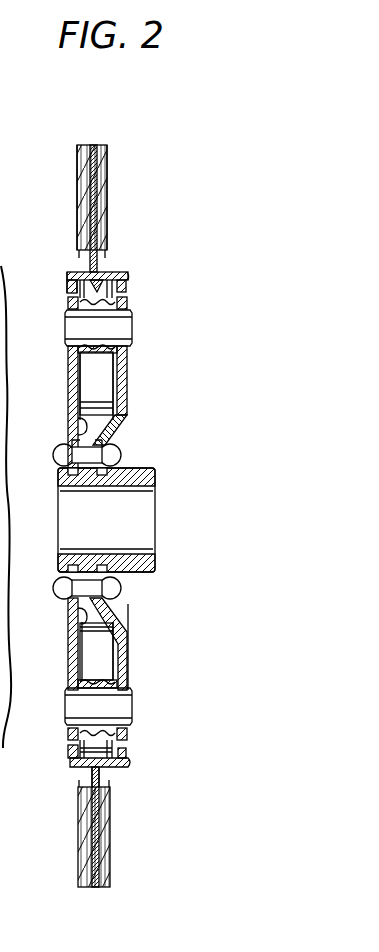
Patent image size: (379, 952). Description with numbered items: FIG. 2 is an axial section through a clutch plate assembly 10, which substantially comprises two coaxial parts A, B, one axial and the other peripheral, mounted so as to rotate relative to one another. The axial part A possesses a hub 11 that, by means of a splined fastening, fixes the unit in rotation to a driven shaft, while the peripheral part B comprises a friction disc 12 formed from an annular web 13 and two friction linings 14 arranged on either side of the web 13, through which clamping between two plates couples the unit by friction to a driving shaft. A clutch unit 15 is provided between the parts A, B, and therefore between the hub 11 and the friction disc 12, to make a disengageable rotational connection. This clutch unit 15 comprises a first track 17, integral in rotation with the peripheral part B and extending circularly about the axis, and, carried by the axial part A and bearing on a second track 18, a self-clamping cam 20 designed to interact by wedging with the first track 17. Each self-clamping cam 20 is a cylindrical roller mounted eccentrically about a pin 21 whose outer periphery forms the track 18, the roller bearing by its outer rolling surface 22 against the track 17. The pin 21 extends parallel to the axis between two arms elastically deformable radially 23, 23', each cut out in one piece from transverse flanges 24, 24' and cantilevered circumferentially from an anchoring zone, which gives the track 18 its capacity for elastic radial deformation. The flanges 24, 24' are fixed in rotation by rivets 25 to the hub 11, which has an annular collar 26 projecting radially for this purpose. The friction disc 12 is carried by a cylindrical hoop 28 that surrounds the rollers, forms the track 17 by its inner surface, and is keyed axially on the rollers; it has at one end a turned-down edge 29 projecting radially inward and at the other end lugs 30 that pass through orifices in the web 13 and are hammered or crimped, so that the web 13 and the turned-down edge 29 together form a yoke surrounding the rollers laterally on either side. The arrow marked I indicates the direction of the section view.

The clutch plate assembly 10 is at (52, 161).
The hub 11 is at (157, 478).
The friction disc 12 is at (115, 186).
The annular web 13 is at (91, 148).
The friction linings 14 is at (76, 163).
The clutch unit 15 is at (127, 291).
The first track 17 is at (100, 276).
The second track 18 is at (76, 352).
The self-clamping cam 20 is at (110, 393).
The pin 21 is at (110, 339).
The outer rolling surface 22 is at (76, 420).
The arm elastically deformable radially 23 is at (128, 507).
The arm elastically deformable radially 23' is at (48, 291).
The flange 24 is at (126, 383).
The flange 24' is at (48, 408).
The rivets 25 is at (119, 458).
The annular collar 26 is at (120, 441).
The cylindrical hoop 28 is at (78, 272).
The turned-down edge 29 is at (68, 283).
The lugs 30 is at (122, 271).
The axial part A is at (150, 400).
The peripheral part B is at (55, 198).
The axis I is at (157, 517).